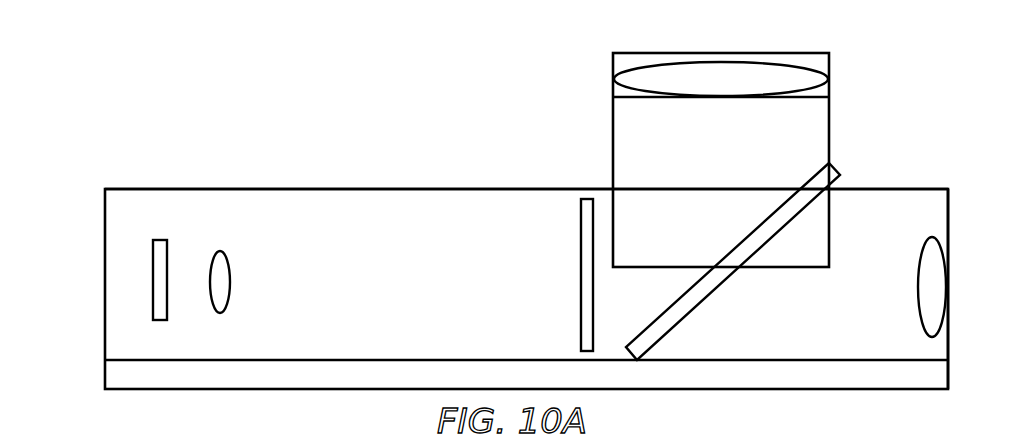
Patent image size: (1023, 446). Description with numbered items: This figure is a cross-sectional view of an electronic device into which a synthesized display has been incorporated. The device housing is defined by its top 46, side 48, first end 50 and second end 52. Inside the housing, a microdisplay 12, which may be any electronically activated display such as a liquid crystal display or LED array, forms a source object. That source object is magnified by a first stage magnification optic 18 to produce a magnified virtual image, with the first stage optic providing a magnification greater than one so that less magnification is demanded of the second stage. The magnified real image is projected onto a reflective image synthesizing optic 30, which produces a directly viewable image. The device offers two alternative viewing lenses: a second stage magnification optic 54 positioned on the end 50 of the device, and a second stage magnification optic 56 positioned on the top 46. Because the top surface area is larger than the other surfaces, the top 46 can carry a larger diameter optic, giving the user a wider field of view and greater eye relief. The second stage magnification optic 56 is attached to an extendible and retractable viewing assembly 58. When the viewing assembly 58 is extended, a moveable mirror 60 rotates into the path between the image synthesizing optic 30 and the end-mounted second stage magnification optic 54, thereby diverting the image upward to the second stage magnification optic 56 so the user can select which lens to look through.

The microdisplay 12 is at (110, 294).
The first stage magnification optic 18 is at (219, 313).
The reflective image synthesizing optic 30 is at (563, 246).
The top 46 is at (526, 164).
The side 48 is at (136, 171).
The first end 50 is at (494, 289).
The second end 52 is at (974, 289).
The second stage magnification optic 54 is at (959, 287).
The second stage magnification optic 56 is at (721, 56).
The extendible and retractable viewing assembly 58 is at (749, 160).
The moveable mirror 60 is at (733, 261).